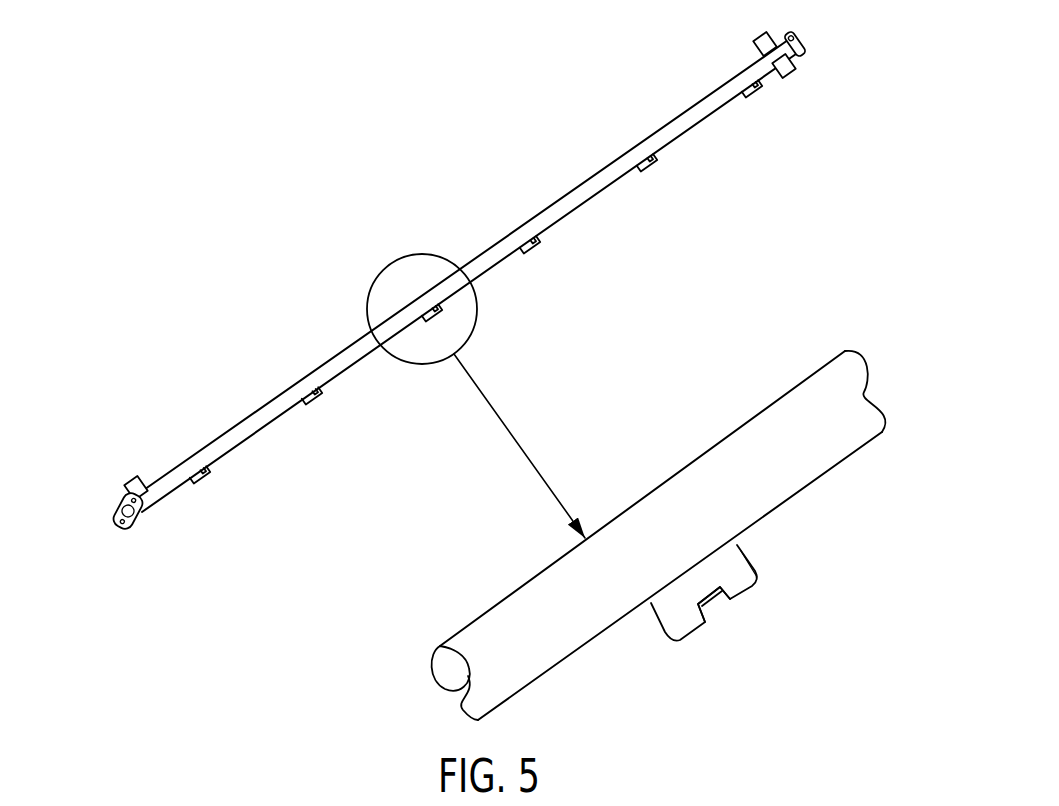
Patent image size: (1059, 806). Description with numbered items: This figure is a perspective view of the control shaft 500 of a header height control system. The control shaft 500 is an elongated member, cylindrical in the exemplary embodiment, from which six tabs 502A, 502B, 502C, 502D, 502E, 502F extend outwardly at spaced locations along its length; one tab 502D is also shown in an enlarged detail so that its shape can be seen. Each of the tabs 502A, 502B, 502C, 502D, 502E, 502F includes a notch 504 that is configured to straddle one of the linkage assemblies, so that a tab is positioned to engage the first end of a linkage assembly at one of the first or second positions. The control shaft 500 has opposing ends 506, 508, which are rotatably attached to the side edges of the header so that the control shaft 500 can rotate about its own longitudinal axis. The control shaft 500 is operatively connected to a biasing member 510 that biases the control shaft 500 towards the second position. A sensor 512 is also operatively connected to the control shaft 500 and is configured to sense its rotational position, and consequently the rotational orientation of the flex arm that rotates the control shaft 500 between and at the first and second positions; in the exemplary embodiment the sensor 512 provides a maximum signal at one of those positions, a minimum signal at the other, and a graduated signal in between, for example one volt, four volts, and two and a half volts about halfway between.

The control shaft 500 is at (278, 262).
The tab 502A is at (759, 84).
The tab 502B is at (654, 156).
The tab 502C is at (537, 238).
The tab 502D is at (439, 306).
The tab 502E is at (320, 389).
The tab 502F is at (207, 468).
The notch 504 is at (722, 618).
The end 506 is at (812, 42).
The end 508 is at (114, 501).
The biasing member 510 is at (755, 38).
The sensor 512 is at (799, 77).